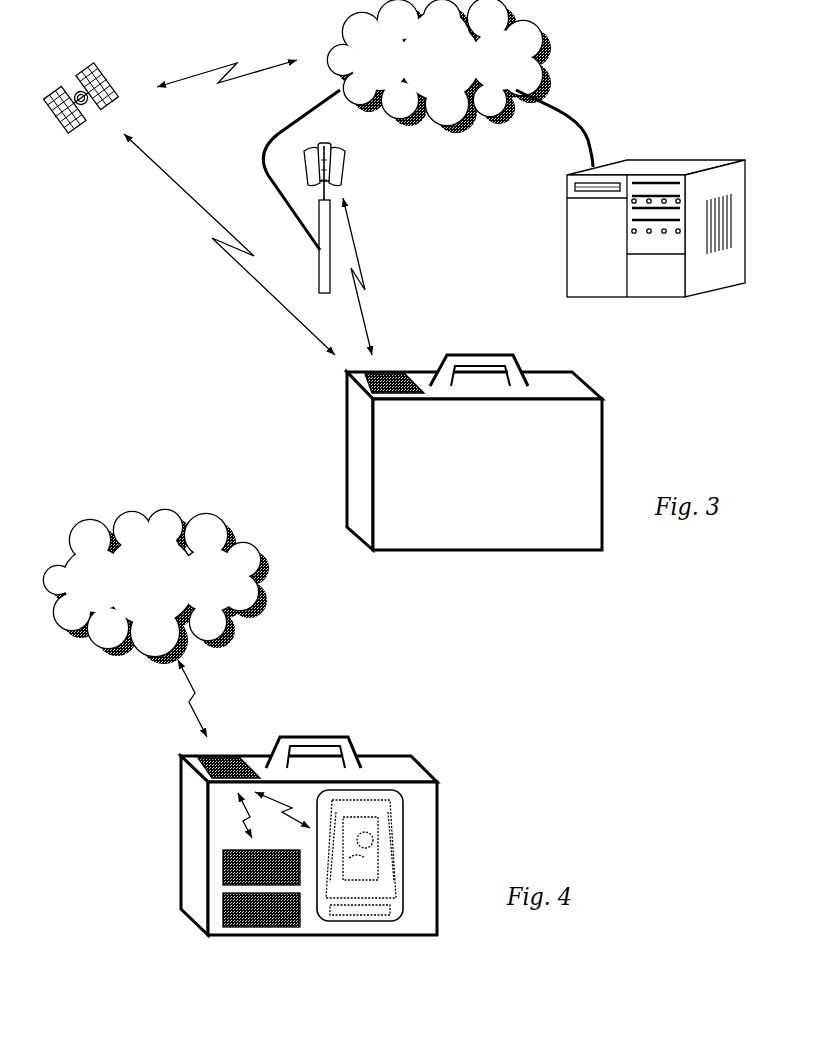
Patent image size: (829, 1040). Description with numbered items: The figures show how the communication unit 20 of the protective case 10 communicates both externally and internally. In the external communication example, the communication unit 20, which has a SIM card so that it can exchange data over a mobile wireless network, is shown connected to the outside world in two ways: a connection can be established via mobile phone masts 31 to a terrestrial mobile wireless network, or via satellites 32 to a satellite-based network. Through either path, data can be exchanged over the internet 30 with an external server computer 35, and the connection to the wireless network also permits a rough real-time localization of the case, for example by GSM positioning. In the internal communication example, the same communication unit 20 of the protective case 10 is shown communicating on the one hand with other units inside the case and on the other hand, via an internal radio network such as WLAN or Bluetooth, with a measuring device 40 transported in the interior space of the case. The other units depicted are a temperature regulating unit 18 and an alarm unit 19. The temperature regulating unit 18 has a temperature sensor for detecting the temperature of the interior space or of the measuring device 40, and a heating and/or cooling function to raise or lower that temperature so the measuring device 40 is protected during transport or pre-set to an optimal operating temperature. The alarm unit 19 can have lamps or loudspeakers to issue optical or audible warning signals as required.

In FIG. 3, the protective case 10 is at (476, 447).
In FIG. 4, the protective case 10 is at (311, 847).
In FIG. 4, the temperature regulating unit 18 is at (225, 928).
In FIG. 4, the alarm unit 19 is at (217, 875).
In FIG. 3, the communication unit 20 is at (354, 399).
In FIG. 4, the communication unit 20 is at (189, 783).
In FIG. 3, the internet 30 is at (439, 84).
In FIG. 4, the internet 30 is at (171, 597).
In FIG. 3, the mobile phone masts 31 is at (360, 218).
In FIG. 3, the satellites 32 is at (87, 124).
In FIG. 3, the external server computer 35 is at (656, 197).
In FIG. 4, the measuring device 40 is at (403, 855).